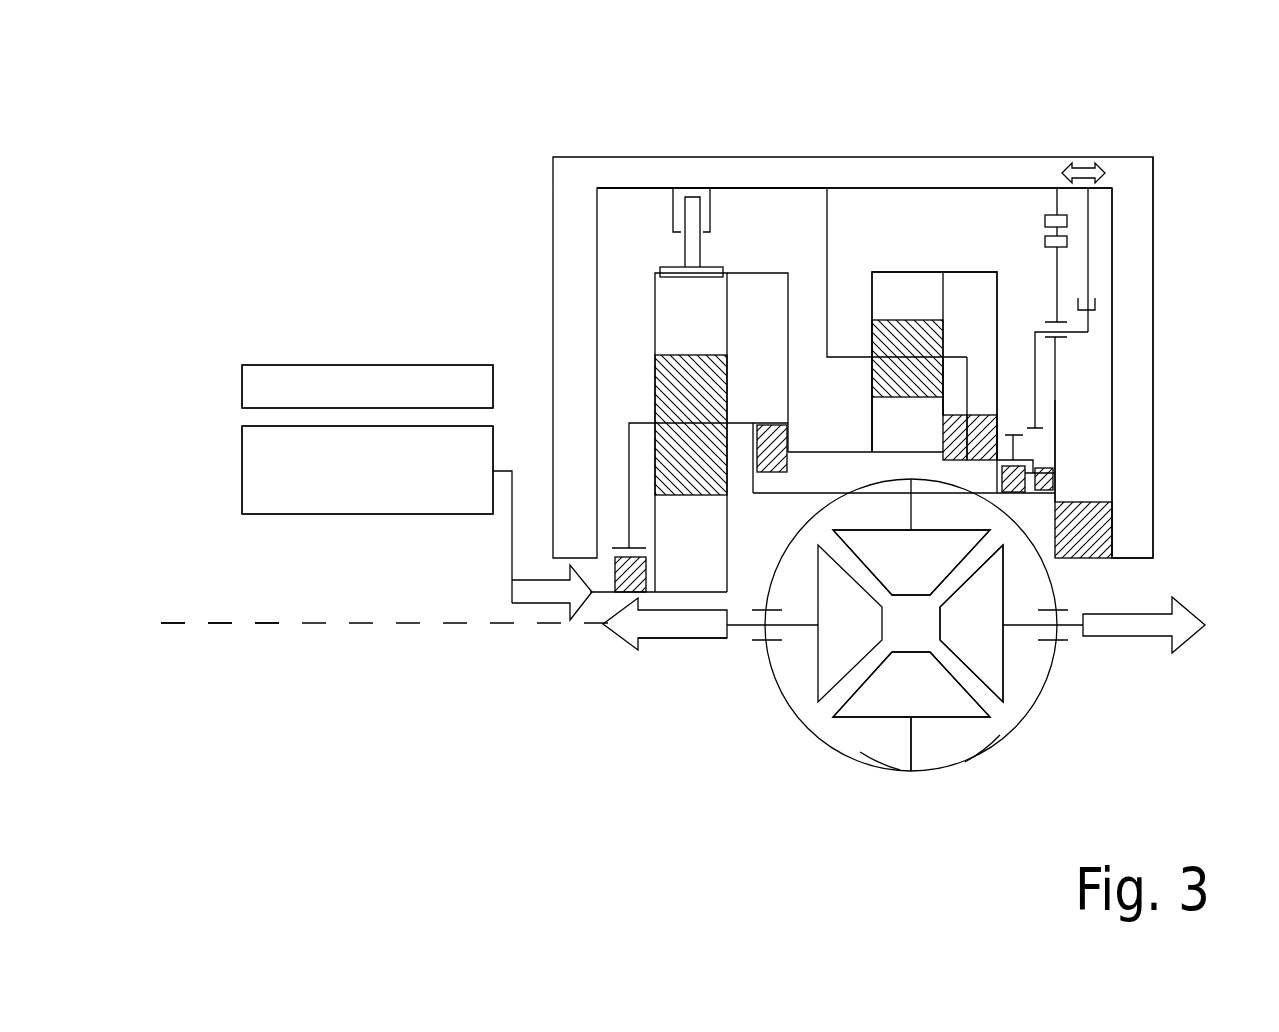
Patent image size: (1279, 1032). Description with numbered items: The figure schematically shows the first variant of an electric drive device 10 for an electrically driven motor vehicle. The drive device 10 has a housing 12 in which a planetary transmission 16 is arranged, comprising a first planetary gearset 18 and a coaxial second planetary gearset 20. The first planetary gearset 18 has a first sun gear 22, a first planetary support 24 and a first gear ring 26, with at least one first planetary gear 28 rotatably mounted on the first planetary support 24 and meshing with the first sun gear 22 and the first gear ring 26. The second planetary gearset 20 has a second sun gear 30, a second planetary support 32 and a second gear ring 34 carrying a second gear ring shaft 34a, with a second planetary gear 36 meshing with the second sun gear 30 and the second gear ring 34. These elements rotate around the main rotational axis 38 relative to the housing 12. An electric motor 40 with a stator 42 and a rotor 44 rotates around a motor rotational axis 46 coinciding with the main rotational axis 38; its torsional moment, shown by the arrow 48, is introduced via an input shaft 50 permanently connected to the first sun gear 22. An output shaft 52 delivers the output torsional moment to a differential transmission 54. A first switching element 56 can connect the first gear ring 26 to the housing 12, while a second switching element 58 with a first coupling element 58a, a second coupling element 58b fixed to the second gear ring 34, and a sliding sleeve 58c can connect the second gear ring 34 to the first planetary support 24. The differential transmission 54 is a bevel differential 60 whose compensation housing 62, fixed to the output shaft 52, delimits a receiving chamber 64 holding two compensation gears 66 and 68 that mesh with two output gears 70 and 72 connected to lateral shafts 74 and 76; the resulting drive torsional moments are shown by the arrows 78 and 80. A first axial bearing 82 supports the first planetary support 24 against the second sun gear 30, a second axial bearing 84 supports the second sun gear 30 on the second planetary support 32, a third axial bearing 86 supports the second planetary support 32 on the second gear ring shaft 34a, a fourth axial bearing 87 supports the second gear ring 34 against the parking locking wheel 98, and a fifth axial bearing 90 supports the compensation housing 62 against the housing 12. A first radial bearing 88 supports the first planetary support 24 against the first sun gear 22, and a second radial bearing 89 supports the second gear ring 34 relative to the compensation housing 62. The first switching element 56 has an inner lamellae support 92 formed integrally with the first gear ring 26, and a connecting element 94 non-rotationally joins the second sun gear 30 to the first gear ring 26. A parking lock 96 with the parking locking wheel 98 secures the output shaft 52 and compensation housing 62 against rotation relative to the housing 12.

The electric drive device 10 is at (1142, 142).
The housing 12 is at (1135, 232).
The planetary transmission 16 is at (920, 140).
The first planetary gearset 18 is at (725, 255).
The second planetary gearset 20 is at (920, 237).
The first sun gear 22 is at (685, 573).
The first planetary support 24 is at (640, 423).
The first gear ring 26 is at (665, 325).
The first planetary gear 28 is at (707, 397).
The second sun gear 30 is at (915, 405).
The second planetary support 32 is at (858, 350).
The second gear ring 34 is at (907, 287).
The second gear ring shaft 34a is at (1088, 285).
The second planetary gear 36 is at (923, 337).
The main rotational axis 38 is at (410, 625).
The electric motor 40 is at (242, 360).
The stator 42 is at (298, 375).
The rotor 44 is at (305, 505).
The motor rotational axis 46 is at (232, 625).
The arrow 48 is at (547, 623).
The input shaft 50 is at (640, 600).
The output shaft 52 is at (792, 488).
The differential transmission 54 is at (1066, 712).
The first switching element 56 is at (643, 218).
The second switching element 58 is at (1017, 412).
The first coupling element 58a is at (1035, 388).
The second coupling element 58b is at (1055, 443).
The sliding sleeve 58c is at (1095, 307).
The bevel differential 60 is at (983, 748).
The compensation housing 62 is at (930, 770).
The receiving chamber 64 is at (878, 760).
The compensation gear 66 is at (958, 538).
The compensation gear 68 is at (968, 712).
The output gear 70 is at (853, 605).
The output gear 72 is at (993, 603).
The lateral shaft 74 is at (1070, 627).
The lateral shaft 76 is at (738, 627).
The arrow 78 is at (660, 640).
The arrow 80 is at (1200, 625).
The first axial bearing 82 is at (773, 462).
The second axial bearing 84 is at (953, 445).
The third axial bearing 86 is at (985, 430).
The fourth axial bearing 87 is at (1055, 490).
The first radial bearing 88 is at (625, 560).
The second radial bearing 89 is at (1055, 473).
The fifth axial bearing 90 is at (1088, 552).
The inner lamellae support 92 is at (713, 273).
The connecting element 94 is at (797, 300).
The parking lock 96 is at (1068, 143).
The parking locking wheel 98 is at (1055, 348).